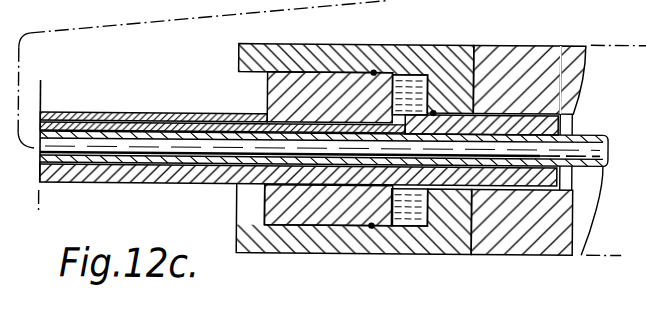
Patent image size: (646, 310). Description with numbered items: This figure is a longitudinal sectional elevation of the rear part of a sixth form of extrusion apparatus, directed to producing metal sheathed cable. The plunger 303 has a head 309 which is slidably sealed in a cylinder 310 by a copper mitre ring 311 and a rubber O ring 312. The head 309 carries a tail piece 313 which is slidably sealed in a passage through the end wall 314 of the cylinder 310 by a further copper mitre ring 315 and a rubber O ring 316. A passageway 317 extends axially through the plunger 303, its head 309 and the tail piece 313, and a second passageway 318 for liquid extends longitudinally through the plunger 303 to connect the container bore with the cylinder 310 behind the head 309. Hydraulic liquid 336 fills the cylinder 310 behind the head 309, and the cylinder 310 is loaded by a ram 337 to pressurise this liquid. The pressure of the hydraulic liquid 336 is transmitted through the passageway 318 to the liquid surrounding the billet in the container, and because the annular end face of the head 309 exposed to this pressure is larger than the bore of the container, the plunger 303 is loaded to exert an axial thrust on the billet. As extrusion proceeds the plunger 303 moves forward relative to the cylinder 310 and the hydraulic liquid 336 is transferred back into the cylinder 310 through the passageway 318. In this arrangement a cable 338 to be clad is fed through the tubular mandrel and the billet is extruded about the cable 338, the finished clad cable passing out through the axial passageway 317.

The plunger 303 is at (182, 181).
The head 309 is at (313, 81).
The cylinder 310 is at (298, 45).
The copper mitre ring 311 is at (374, 68).
The rubber O ring 312 is at (399, 69).
The tail piece 313 is at (560, 40).
The end wall 314 is at (523, 113).
The copper mitre ring 315 is at (463, 87).
The rubber O ring 316 is at (436, 107).
The passageway 317 is at (183, 122).
The passageway for liquid 318 is at (137, 111).
The hydraulic liquid 336 is at (403, 215).
The ram 337 is at (488, 237).
The cable 338 is at (588, 246).